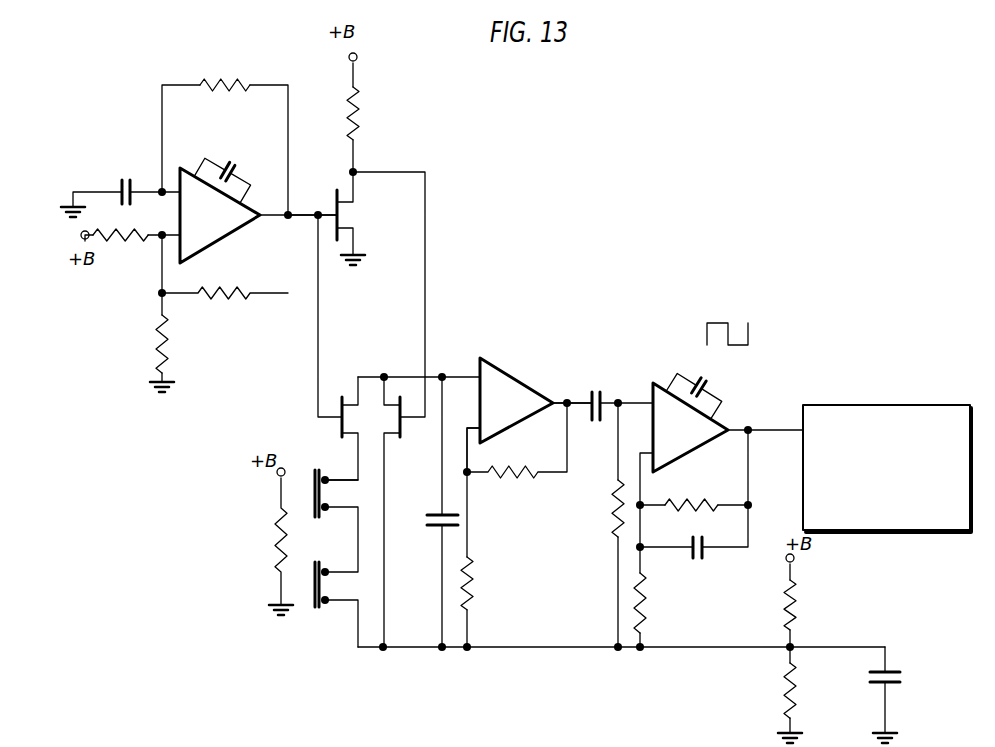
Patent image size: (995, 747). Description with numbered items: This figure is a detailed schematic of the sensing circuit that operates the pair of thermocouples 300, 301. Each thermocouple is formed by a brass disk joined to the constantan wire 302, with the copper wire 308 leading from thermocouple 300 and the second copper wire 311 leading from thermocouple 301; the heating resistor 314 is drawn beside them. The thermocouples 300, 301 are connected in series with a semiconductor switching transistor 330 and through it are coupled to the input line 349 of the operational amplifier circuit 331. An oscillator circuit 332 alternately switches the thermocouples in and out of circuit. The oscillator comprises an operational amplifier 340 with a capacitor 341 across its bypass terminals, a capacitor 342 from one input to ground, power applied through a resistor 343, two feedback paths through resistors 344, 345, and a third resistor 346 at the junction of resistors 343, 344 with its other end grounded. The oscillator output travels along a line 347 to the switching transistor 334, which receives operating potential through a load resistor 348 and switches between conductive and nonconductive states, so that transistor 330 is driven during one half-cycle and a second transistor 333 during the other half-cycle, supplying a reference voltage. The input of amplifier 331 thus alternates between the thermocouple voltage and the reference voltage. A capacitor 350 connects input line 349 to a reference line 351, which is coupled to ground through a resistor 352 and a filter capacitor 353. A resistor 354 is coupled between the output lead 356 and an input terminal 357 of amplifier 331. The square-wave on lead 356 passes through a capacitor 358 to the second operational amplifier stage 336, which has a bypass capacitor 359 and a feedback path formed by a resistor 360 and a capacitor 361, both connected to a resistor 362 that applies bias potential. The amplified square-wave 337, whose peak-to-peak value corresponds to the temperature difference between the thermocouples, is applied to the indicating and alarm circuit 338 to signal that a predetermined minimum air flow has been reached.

The oscillator circuit 332 is at (187, 68).
The resistor 345 is at (243, 82).
The operational amplifier 340 is at (178, 168).
The capacitor 341 is at (232, 167).
The capacitor 342 is at (112, 175).
The resistor 343 is at (130, 242).
The resistor 344 is at (223, 290).
The third resistor 346 is at (170, 343).
The line 347 is at (295, 212).
The load resistor 348 is at (358, 95).
The switching transistor 334 is at (338, 223).
The transistor 330 is at (335, 405).
The second transistor 333 is at (405, 427).
The input line 349 is at (462, 376).
The operational amplifier circuit 331 is at (505, 380).
The input terminal 357 is at (478, 443).
The resistor 354 is at (507, 483).
The capacitor 350 is at (433, 527).
The reference line 351 is at (488, 650).
The copper wire 308 is at (358, 627).
The thermocouple 301 is at (307, 488).
The second copper wire 311 is at (355, 467).
The constantan wire 302 is at (355, 533).
The thermocouple 300 is at (310, 595).
The heating resistor 314 is at (280, 537).
The output lead 356 is at (573, 397).
The capacitor 358 is at (610, 385).
The bypass capacitor 359 is at (693, 373).
The second operational amplifier stage 336 is at (730, 423).
The square-wave 337 is at (707, 323).
The indicating and alarm circuit 338 is at (878, 405).
The resistor 360 is at (690, 505).
The capacitor 361 is at (703, 555).
The resistor 362 is at (645, 592).
The resistor 352 is at (785, 690).
The filter capacitor 353 is at (890, 685).